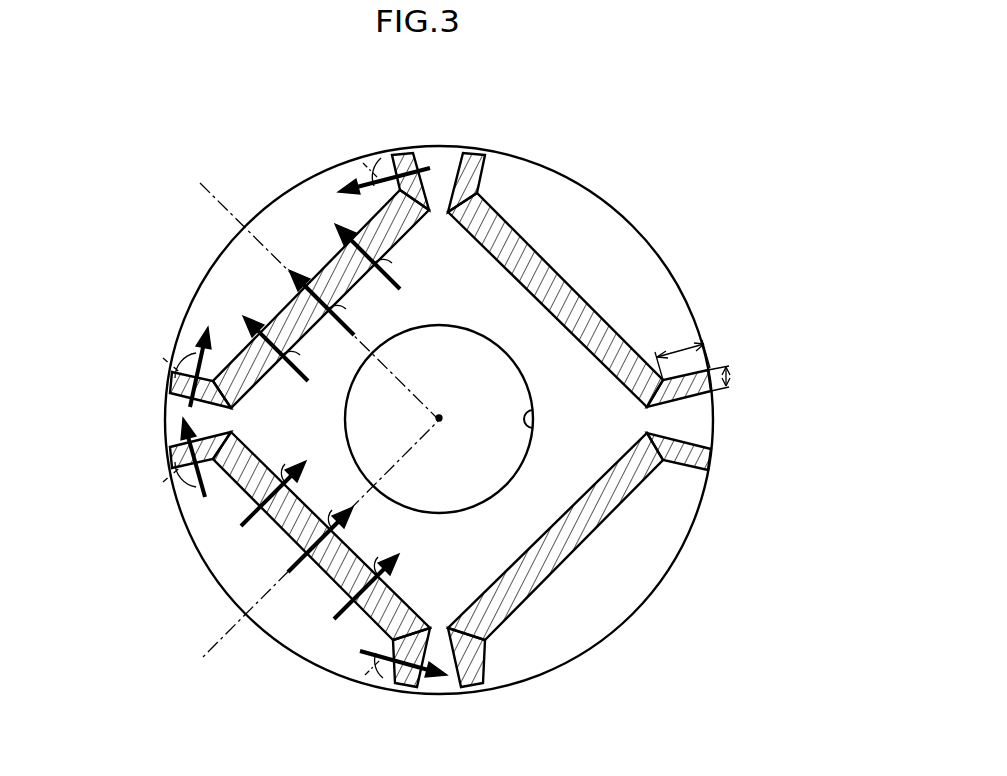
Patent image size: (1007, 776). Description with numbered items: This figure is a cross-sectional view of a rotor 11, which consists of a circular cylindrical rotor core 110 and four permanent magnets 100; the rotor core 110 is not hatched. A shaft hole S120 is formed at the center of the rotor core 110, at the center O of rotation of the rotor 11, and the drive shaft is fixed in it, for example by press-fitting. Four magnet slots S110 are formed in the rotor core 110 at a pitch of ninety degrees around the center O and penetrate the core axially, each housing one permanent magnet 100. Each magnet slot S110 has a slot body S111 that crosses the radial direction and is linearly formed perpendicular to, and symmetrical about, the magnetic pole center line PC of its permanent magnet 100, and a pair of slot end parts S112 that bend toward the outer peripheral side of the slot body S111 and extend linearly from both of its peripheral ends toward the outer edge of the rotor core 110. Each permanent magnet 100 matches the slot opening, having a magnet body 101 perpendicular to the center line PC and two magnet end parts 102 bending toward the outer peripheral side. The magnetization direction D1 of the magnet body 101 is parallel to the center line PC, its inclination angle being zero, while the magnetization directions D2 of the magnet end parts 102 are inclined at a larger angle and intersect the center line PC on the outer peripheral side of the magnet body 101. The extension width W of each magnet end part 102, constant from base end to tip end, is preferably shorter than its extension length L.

The rotor 11 is at (505, 132).
The rotor core 110 is at (441, 148).
The permanent magnet 100 is at (117, 143).
The magnet body 101 is at (300, 300).
The magnet end part 102 is at (400, 160).
The magnet slot S110 is at (242, 380).
The slot body S111 is at (544, 552).
The slot end part S112 is at (466, 655).
The shaft hole S120 is at (536, 408).
The center of rotation O is at (441, 414).
The magnetic pole center line PC is at (227, 207).
The magnetization direction of the magnet body D1 is at (300, 268).
The magnetization direction of the magnet end part D2 is at (340, 165).
The extension length of the magnet end part L is at (682, 351).
The extension width of the magnet end part W is at (735, 376).